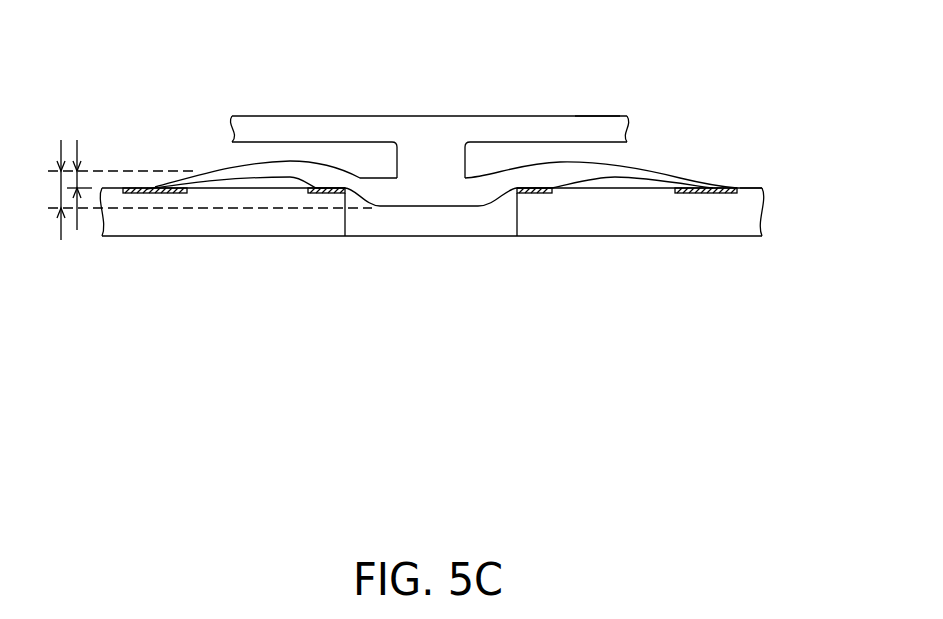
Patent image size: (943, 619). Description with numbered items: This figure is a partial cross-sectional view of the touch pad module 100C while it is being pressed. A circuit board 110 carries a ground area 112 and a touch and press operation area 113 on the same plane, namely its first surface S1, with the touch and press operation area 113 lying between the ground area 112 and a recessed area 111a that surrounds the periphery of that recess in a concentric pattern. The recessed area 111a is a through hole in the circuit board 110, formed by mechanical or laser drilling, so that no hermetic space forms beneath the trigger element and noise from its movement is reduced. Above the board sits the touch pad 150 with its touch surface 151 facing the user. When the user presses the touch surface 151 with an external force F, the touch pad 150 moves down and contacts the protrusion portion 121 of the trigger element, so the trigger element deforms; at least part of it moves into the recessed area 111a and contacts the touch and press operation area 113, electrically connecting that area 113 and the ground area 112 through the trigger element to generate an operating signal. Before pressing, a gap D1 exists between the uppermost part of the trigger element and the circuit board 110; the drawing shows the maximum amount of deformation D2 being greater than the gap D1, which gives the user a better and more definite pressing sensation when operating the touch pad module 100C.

The touch pad module 100C is at (754, 377).
The circuit board 110 is at (750, 210).
The recessed area 111a is at (430, 214).
The ground area 112 is at (145, 193).
The touch and press operation area 113 is at (332, 193).
The protrusion portion 121 is at (413, 153).
The touch pad 150 is at (511, 128).
The touch surface 151 is at (567, 116).
The external force F is at (429, 115).
The first surface S1 is at (747, 188).
The gap D1 is at (80, 179).
The maximum amount of deformation D2 is at (199, 190).